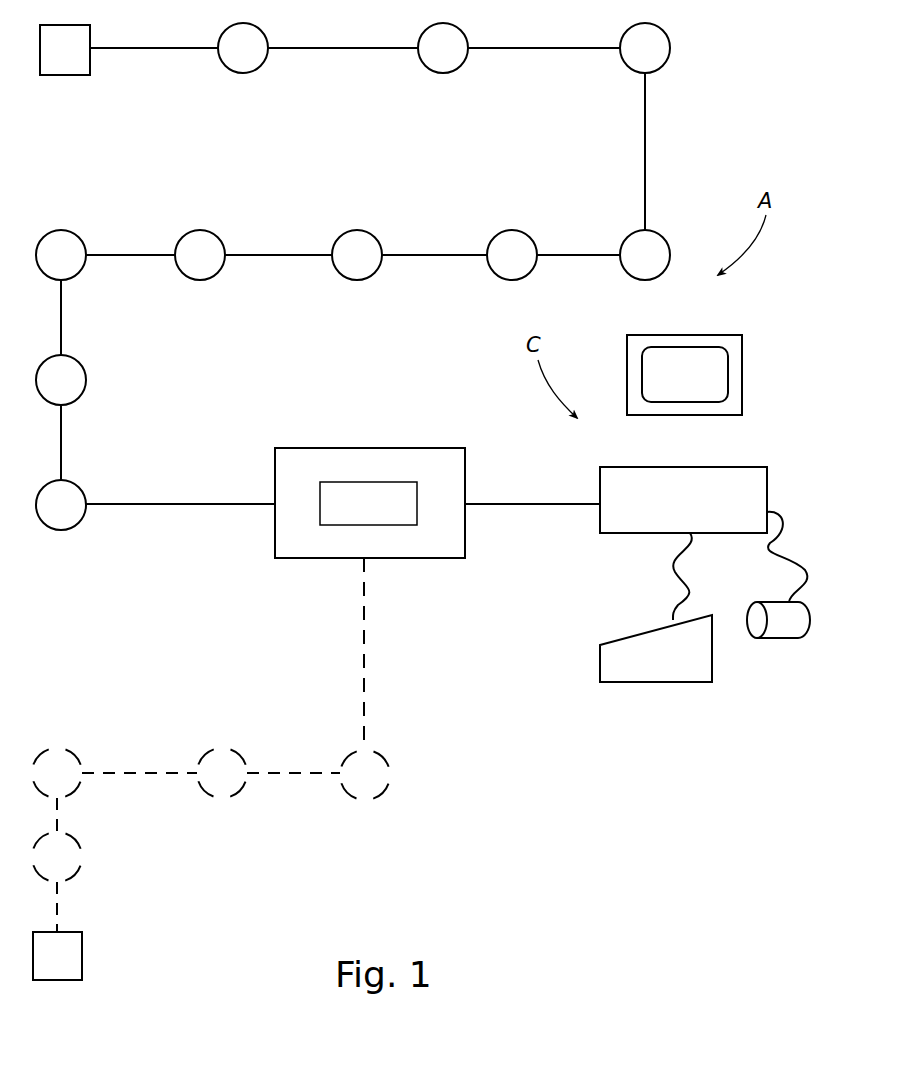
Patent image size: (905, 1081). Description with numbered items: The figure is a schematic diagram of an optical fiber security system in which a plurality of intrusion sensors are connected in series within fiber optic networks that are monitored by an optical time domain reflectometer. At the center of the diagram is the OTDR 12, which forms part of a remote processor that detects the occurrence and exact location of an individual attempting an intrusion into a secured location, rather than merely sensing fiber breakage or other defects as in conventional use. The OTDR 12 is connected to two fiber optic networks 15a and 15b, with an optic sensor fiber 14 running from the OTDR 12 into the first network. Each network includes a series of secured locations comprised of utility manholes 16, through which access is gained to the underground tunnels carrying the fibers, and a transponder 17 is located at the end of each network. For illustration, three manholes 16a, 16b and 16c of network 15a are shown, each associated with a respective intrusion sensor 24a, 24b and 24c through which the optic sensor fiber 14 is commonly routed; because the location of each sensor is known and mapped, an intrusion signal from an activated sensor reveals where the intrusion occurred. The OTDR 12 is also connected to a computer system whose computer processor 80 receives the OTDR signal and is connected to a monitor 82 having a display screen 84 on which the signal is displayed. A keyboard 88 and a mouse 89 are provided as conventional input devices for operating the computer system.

The optical time domain reflectometer 12 is at (403, 448).
The optic sensor fiber 14 is at (156, 493).
The fiber optic network 15a is at (198, 315).
The fiber optic network 15b is at (170, 698).
The utility manhole 16 is at (364, 228).
The manhole 16a is at (71, 483).
The manhole 16b is at (72, 358).
The manhole 16c is at (76, 233).
The transponder 17 is at (61, 502).
The sensor 24a is at (61, 505).
The sensor 24b is at (61, 380).
The sensor 24c is at (61, 255).
The computer processor 80 is at (683, 500).
The monitor 82 is at (745, 365).
The display screen 84 is at (685, 374).
The keyboard 88 is at (656, 607).
The mouse 89 is at (775, 640).